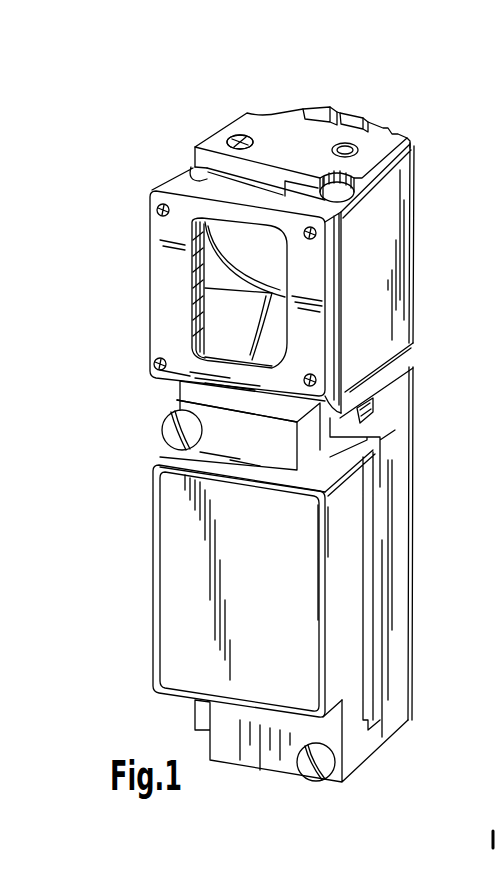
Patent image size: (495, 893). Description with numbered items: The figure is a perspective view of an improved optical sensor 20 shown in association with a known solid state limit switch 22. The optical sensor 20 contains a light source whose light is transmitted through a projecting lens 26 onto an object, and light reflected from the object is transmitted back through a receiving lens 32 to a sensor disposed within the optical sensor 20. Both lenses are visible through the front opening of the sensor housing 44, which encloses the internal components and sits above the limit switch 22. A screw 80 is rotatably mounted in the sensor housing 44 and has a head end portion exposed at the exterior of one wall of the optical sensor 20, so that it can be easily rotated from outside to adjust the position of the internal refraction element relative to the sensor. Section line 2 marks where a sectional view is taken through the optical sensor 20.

The optical sensor 20 is at (376, 108).
The solid state limit switch 22 is at (155, 642).
The projecting lens 26 is at (228, 258).
The receiving lens 32 is at (232, 318).
The sensor housing 44 is at (377, 226).
The screw 80 is at (238, 134).
The section line 2- 2 is at (103, 397).